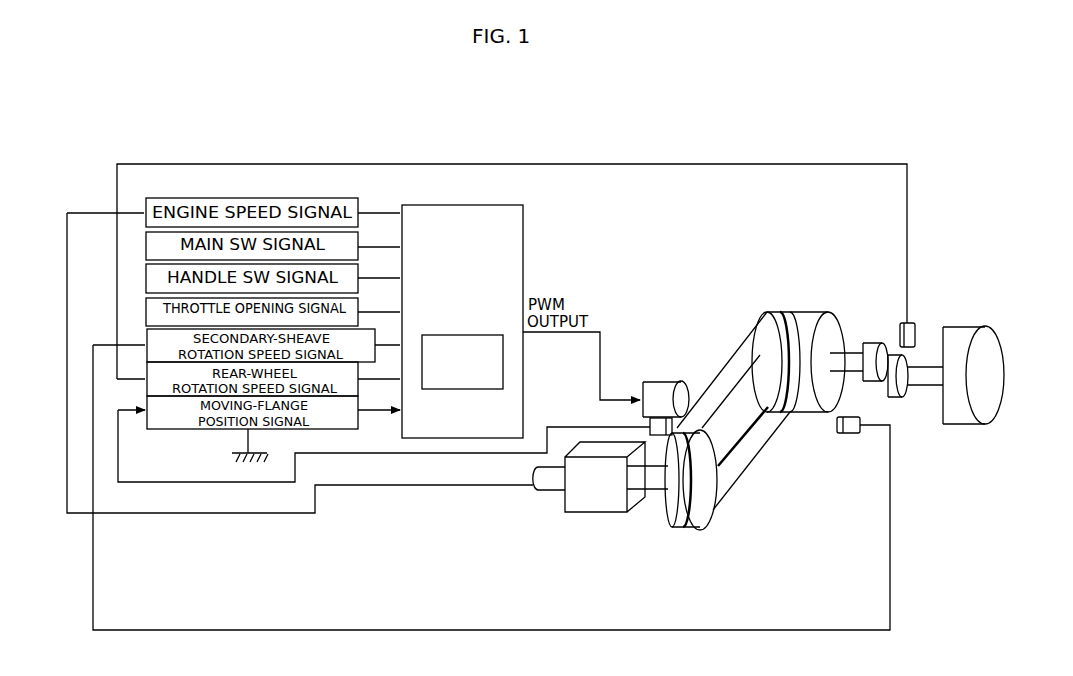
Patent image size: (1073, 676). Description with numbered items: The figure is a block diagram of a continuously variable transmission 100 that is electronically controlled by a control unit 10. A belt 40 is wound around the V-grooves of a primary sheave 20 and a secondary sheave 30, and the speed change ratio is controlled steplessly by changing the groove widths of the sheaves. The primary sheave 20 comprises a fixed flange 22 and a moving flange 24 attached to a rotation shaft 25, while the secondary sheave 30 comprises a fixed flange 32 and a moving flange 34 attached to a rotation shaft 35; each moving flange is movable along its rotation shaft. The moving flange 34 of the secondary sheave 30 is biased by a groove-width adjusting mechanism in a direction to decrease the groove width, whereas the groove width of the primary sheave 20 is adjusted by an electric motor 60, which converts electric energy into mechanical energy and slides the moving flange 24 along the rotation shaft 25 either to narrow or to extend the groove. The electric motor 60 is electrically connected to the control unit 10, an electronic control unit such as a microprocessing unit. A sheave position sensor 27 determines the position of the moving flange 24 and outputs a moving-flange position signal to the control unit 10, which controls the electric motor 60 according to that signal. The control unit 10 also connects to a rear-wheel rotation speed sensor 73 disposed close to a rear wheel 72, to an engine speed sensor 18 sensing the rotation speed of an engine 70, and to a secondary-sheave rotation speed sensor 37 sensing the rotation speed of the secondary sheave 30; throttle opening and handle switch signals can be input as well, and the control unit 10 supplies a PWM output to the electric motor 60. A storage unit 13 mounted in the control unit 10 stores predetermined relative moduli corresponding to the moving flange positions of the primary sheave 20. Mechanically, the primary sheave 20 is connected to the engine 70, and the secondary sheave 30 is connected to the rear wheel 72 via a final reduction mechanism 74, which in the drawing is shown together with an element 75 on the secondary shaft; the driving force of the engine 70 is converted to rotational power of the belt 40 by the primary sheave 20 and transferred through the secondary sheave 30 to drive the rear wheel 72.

The control unit 10 is at (523, 218).
The storage unit 13 is at (462, 362).
The engine speed sensor 18 is at (550, 490).
The primary sheave 20 is at (695, 542).
The fixed flange 22 is at (710, 527).
The moving flange 24 is at (676, 527).
The rotation shaft 25 is at (655, 490).
The sheave position sensor 27 is at (645, 420).
The secondary sheave 30 is at (790, 450).
The fixed flange 32 is at (757, 375).
The moving flange 34 is at (776, 355).
The rotation shaft 35 is at (850, 355).
The secondary-sheave rotation speed sensor 37 is at (848, 434).
The belt 40 is at (735, 484).
The electric motor 60 is at (665, 381).
The engine 70 is at (580, 512).
The rear wheel 72 is at (1000, 385).
The rear-wheel rotation speed sensor 73 is at (915, 330).
The final reduction mechanism 74 is at (898, 397).
The centrifugal clutch 75 is at (832, 322).
The continuously variable transmission 100 is at (708, 350).